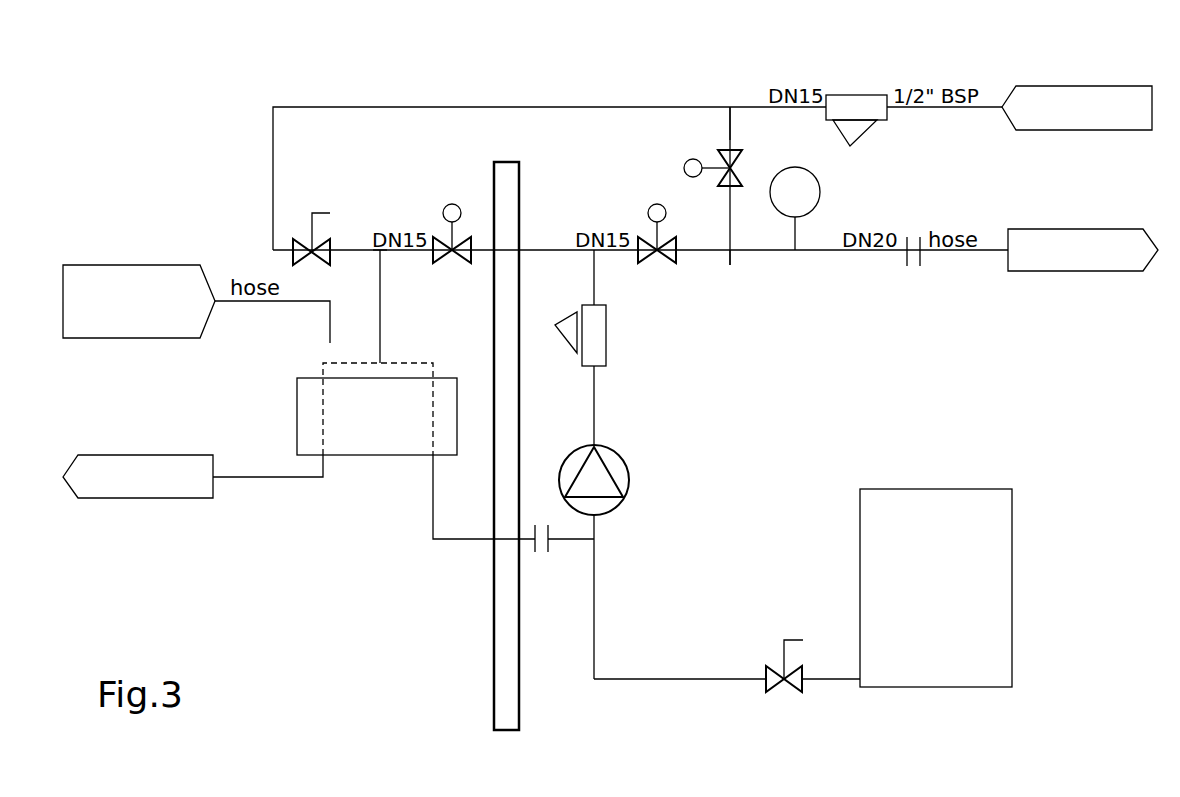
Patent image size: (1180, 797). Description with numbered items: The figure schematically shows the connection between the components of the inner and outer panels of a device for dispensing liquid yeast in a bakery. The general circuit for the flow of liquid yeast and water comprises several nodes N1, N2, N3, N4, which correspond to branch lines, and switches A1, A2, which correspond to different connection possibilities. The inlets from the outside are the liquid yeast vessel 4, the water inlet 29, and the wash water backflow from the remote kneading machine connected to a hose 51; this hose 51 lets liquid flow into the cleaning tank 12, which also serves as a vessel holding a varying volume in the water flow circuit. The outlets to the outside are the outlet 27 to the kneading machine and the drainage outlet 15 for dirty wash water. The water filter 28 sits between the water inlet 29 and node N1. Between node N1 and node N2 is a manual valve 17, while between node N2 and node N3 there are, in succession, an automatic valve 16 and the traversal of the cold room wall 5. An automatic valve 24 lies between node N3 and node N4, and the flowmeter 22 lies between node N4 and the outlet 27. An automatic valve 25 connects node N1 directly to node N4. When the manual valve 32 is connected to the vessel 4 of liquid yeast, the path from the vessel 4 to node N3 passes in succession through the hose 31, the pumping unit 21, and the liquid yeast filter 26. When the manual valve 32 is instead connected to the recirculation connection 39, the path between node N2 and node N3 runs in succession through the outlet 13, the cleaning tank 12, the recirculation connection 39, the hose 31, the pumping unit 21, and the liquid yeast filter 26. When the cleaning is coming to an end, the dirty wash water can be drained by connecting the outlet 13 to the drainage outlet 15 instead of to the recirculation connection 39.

The liquid yeast vessel 4 is at (1000, 520).
The cold room wall 5 is at (510, 380).
The cleaning tank 12 is at (383, 457).
The outlet 13 is at (384, 272).
The drainage outlet 15 is at (190, 500).
The automatic valve 16 is at (452, 204).
The manual valve 17 is at (305, 242).
The pumping unit 21 is at (630, 478).
The flowmeter 22 is at (821, 200).
The automatic valve 24 is at (652, 205).
The automatic valve 25 is at (684, 168).
The liquid yeast filter 26 is at (606, 330).
The outlet 27 is at (1099, 263).
The water filter 28 is at (860, 95).
The water inlet 29 is at (1097, 122).
The hose 31 is at (594, 607).
The manual valve 32 is at (778, 692).
The recirculation connection 39 is at (515, 540).
The hose 51 is at (250, 302).
The node N1 is at (730, 100).
The node N2 is at (375, 255).
The node N3 is at (596, 255).
The node N4 is at (730, 265).
The switch A1 is at (595, 540).
The switch A2 is at (383, 362).